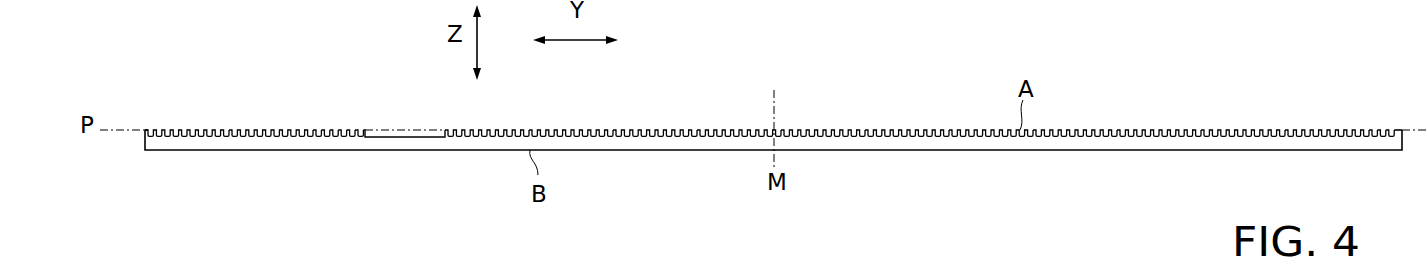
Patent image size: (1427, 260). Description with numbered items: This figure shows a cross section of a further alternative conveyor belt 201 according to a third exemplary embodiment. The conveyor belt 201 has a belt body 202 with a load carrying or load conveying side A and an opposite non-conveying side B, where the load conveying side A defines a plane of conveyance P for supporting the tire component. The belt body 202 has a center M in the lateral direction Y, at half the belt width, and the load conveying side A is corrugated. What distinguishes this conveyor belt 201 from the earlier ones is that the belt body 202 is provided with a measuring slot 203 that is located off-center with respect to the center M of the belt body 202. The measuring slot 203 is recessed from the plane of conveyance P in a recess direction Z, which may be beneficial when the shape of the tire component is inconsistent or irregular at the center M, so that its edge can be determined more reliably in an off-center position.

The conveyor belt 201 is at (240, 65).
The belt body 202 is at (291, 150).
The measuring slot 203 is at (403, 130).